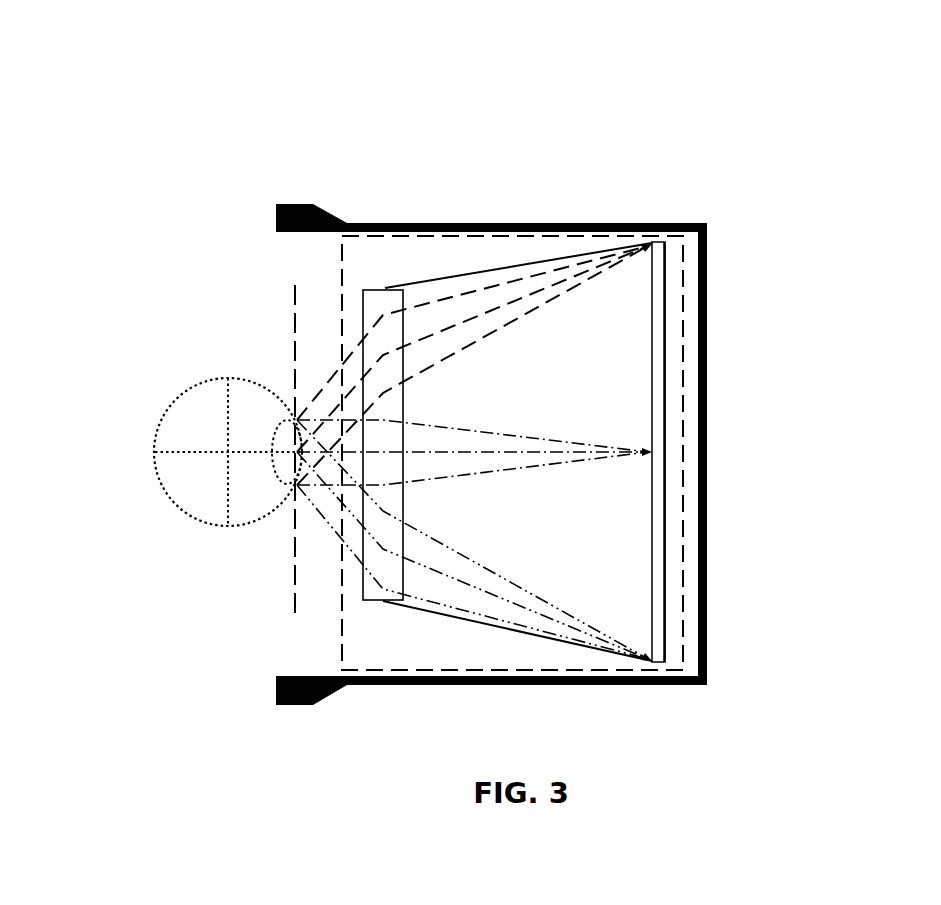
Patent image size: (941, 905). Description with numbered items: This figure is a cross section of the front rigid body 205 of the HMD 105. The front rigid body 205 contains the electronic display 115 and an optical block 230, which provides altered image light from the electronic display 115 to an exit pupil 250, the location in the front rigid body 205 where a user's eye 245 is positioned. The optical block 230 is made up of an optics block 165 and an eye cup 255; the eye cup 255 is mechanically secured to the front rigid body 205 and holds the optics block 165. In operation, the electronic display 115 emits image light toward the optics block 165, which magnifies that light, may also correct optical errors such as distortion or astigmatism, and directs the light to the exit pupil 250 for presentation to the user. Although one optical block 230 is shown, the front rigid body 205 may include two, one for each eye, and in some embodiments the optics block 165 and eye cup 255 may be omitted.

The HMD 105 is at (497, 66).
The front rigid body 205 is at (676, 215).
The optical block 230 is at (341, 582).
The electronic display 115 is at (665, 365).
The eye cup 255 is at (473, 272).
The optics block 165 is at (362, 305).
The eye 245 is at (193, 388).
The exit pupil 250 is at (292, 605).